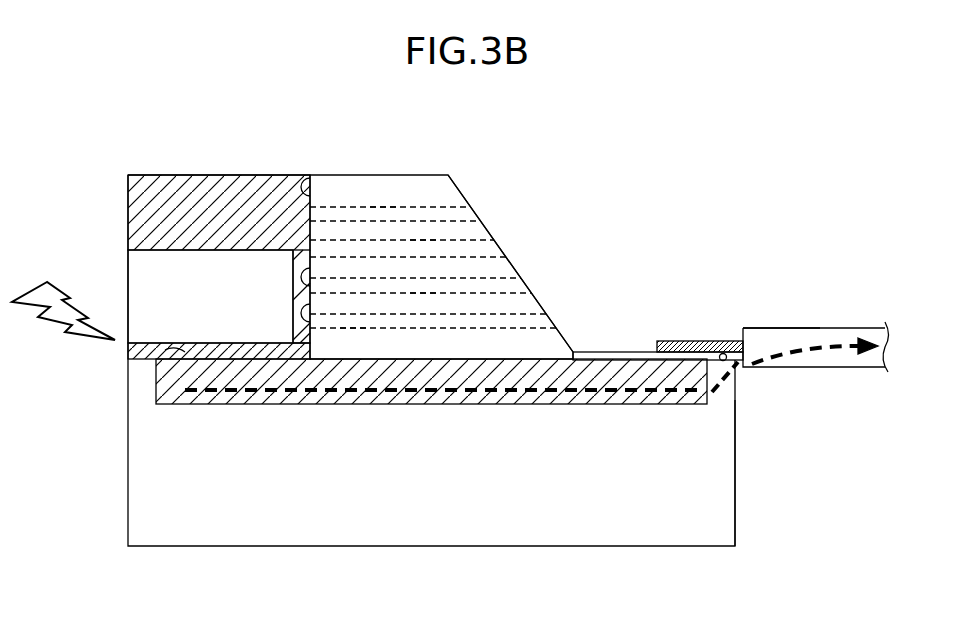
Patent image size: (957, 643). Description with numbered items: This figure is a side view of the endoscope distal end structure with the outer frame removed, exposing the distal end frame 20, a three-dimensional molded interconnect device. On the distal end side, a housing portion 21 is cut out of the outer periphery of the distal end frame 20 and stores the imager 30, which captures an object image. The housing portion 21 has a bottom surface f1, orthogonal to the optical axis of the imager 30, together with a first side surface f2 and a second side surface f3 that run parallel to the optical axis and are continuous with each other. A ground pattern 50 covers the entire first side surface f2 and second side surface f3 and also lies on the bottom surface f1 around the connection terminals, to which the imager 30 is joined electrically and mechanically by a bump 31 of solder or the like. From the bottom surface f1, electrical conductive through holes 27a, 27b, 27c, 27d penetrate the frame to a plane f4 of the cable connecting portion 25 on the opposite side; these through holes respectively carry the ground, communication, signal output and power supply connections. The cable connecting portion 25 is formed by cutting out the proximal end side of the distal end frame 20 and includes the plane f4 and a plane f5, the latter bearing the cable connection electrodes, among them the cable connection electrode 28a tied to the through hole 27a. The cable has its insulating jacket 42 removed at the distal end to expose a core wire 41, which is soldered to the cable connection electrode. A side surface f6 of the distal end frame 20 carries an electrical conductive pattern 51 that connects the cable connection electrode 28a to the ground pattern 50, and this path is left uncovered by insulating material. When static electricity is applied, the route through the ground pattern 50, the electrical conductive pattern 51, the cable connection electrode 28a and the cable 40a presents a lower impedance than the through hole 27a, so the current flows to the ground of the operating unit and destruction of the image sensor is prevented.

The distal end frame 20 is at (341, 175).
The housing portion 21 is at (218, 348).
The cable connecting portion 25 is at (723, 364).
The electrical conductive through hole 27a is at (353, 322).
The electrical conductive through hole 27b is at (425, 283).
The electrical conductive through hole 27c is at (425, 250).
The electrical conductive through hole 27d is at (383, 212).
The cable connection electrode 28a is at (632, 352).
The imager 30 is at (145, 272).
The bump 31 is at (300, 338).
The cable 40a is at (847, 330).
The core wire 41 is at (698, 341).
The insulating jacket 42 is at (783, 328).
The ground pattern 50 is at (157, 175).
The electrical conductive pattern 51 is at (608, 397).
The bottom surface f1 is at (298, 176).
The first side surface f2 is at (136, 350).
The second side surface f3 is at (222, 196).
The plane f4 is at (478, 192).
The plane f5 is at (735, 364).
The side surface f6 is at (716, 486).